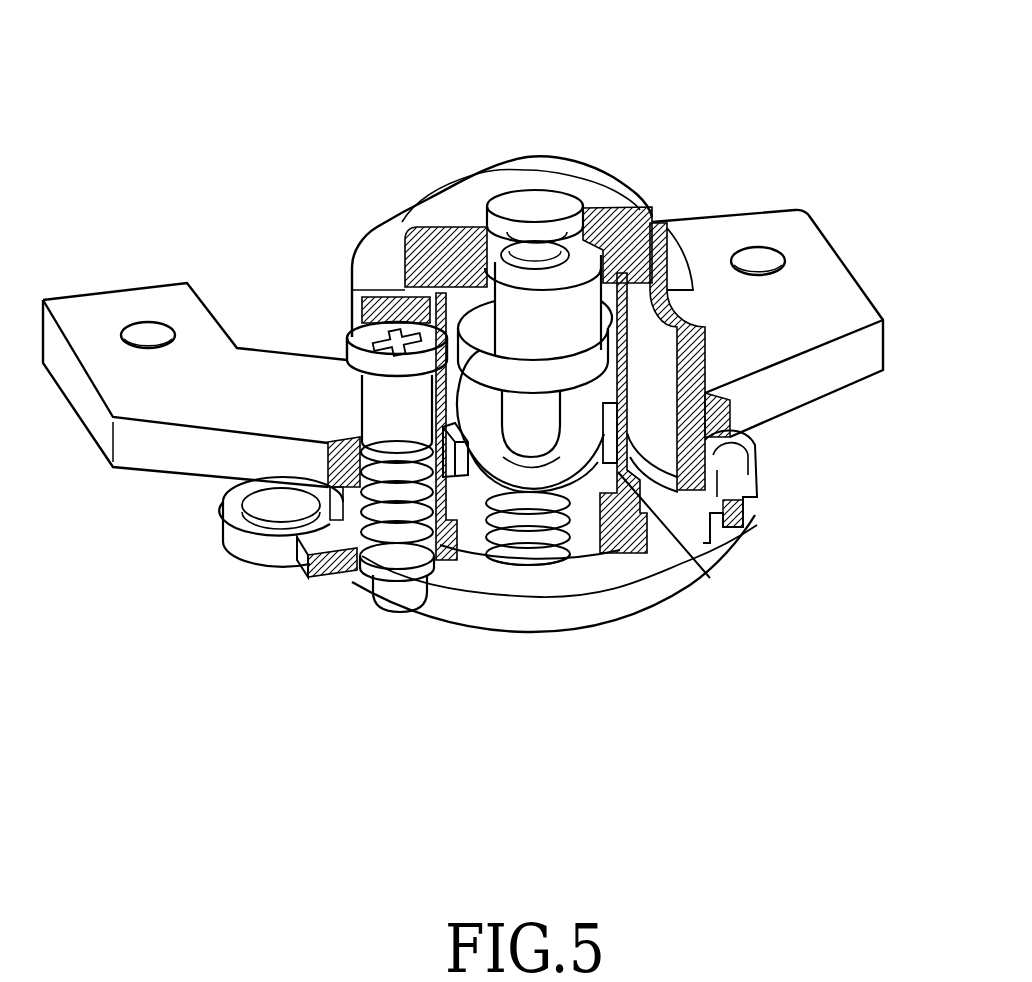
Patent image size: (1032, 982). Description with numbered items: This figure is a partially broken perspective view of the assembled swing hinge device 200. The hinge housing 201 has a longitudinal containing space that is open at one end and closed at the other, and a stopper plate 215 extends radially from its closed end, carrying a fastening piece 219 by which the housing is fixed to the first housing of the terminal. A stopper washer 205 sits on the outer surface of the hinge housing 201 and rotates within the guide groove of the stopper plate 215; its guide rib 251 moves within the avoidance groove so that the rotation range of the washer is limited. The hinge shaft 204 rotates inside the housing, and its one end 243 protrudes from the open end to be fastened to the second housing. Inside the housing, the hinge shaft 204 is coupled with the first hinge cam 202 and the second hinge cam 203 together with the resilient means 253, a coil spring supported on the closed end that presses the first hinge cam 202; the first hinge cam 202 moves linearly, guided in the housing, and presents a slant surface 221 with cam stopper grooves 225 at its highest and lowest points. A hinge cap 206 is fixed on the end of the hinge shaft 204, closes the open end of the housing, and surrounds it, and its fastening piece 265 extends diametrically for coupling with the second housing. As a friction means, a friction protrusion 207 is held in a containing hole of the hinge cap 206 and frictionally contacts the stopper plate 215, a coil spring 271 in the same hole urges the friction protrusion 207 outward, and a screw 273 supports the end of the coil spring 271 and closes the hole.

The swing hinge device 200 is at (338, 47).
The hinge housing 201 is at (707, 547).
The first hinge cam 202 is at (483, 478).
The second hinge cam 203 is at (445, 318).
The hinge shaft 204 is at (548, 407).
The stopper washer 205 is at (643, 570).
The hinge cap 206 is at (582, 175).
The friction protrusion 207 is at (402, 605).
The stopper plate 215 is at (298, 550).
The fastening piece 219 is at (233, 537).
The slant surface 221 is at (587, 435).
The cam stopper grooves 225 is at (570, 497).
The one end of the hinge shaft 243 is at (557, 297).
The guide rib 251 is at (753, 503).
The resilient means 253 is at (548, 460).
The fastening piece 265 is at (100, 303).
The coil spring 271 is at (370, 578).
The screw 273 is at (350, 335).